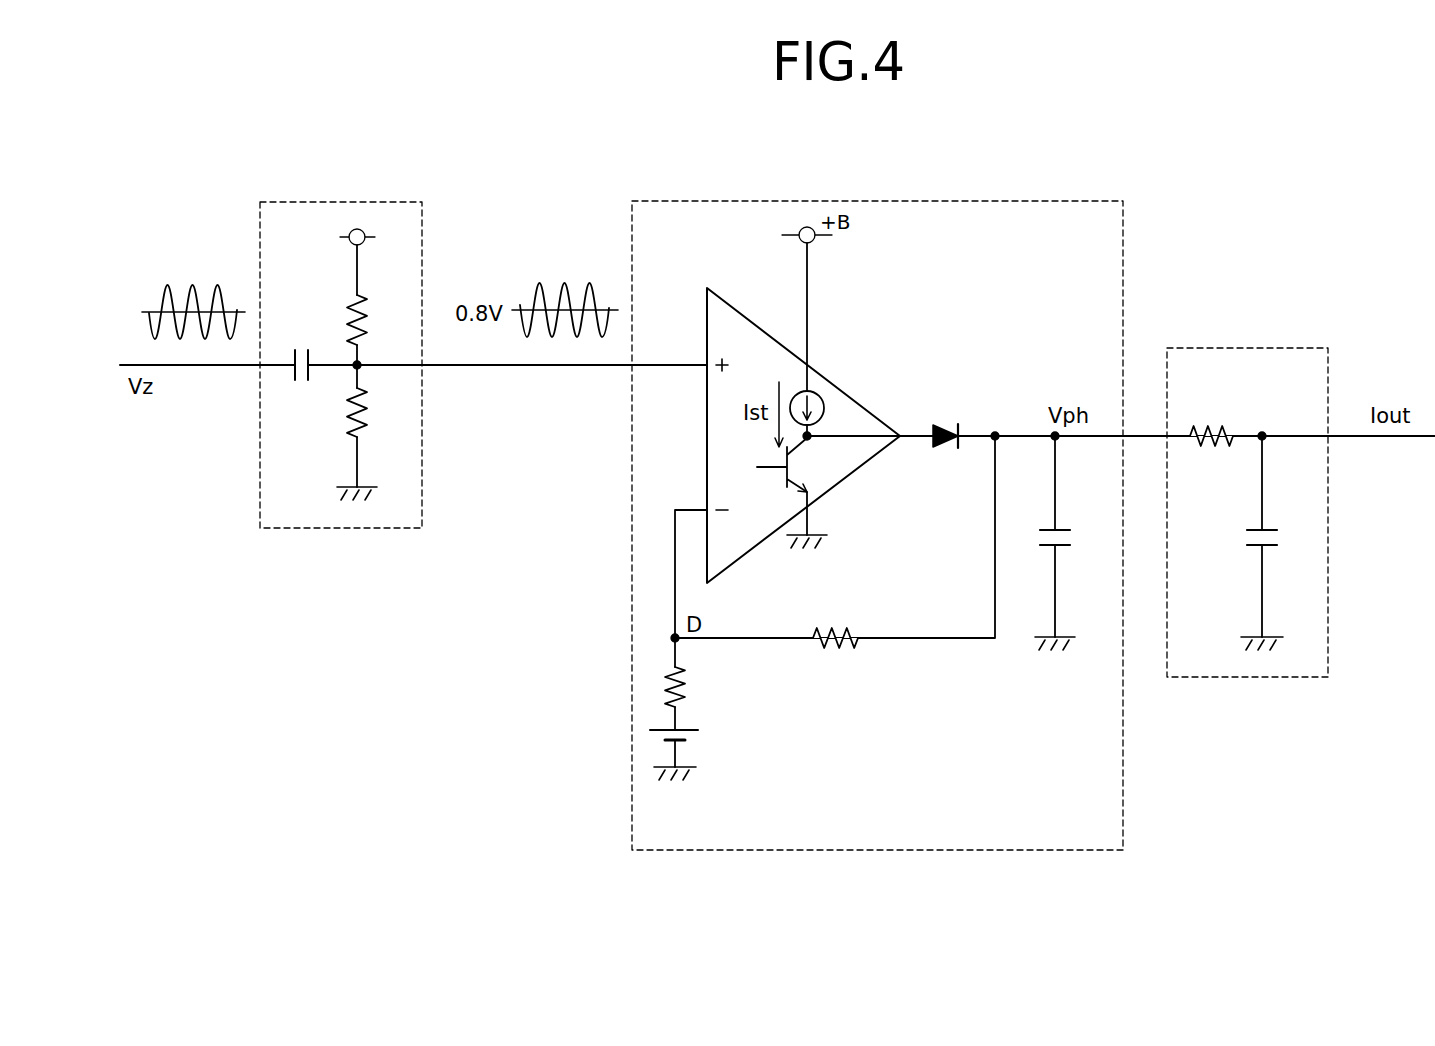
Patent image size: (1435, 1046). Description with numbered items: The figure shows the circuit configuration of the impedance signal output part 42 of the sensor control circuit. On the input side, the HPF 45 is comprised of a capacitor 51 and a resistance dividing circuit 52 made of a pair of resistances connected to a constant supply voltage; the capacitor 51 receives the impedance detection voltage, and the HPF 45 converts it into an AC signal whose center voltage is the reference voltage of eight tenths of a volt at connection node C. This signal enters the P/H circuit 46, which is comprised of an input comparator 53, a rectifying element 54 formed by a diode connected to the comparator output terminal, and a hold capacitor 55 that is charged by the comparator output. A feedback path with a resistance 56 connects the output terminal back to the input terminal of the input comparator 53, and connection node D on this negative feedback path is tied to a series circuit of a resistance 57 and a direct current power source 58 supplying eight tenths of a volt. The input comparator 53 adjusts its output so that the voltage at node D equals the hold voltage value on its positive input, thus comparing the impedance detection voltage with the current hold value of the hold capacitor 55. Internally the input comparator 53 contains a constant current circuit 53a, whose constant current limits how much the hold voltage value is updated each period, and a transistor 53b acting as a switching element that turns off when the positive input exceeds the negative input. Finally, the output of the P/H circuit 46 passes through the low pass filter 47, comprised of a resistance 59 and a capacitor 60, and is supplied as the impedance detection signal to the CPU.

The impedance signal output part 42 is at (1052, 141).
The HPF 45 is at (400, 202).
The P/H circuit 46 is at (1100, 201).
The low pass filter 47 is at (1305, 348).
The capacitor 51 is at (295, 382).
The resistance dividing circuit 52 is at (333, 436).
The input comparator 53 is at (740, 306).
The constant current circuit 53a is at (824, 403).
The transistor 53b is at (803, 450).
The rectifying element 54 is at (947, 426).
The hold capacitor 55 is at (1060, 528).
The resistance 56 is at (853, 636).
The resistance 57 is at (681, 667).
The direct current power source 58 is at (681, 730).
The resistance 59 is at (1226, 430).
The capacitor 60 is at (1268, 528).